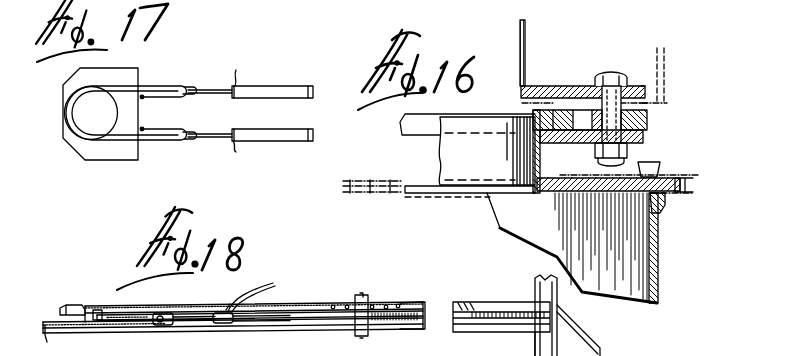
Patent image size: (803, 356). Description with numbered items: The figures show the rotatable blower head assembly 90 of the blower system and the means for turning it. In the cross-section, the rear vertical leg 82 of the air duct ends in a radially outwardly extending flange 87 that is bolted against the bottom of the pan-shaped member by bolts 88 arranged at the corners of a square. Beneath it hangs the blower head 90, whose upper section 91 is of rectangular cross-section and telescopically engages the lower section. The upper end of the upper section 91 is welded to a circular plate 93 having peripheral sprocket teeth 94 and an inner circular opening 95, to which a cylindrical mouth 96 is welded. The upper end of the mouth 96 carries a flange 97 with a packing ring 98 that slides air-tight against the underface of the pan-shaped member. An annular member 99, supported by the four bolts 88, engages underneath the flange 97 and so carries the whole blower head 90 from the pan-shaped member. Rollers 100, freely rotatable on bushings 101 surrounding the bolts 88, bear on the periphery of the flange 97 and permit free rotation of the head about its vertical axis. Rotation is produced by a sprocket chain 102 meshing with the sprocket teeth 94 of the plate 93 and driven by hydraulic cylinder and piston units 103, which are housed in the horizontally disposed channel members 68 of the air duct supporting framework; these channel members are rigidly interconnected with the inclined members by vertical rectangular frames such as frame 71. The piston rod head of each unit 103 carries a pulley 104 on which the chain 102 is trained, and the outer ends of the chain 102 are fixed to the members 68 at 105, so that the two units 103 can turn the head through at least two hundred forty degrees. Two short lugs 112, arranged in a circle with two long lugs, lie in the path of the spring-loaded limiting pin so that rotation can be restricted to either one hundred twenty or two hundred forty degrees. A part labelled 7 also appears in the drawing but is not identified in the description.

In FIG. 17, the housing body 7 is at (118, 160).
In FIG. 18, the channel members 68 is at (323, 306).
In FIG. 16, the vertical rectangular frame 71 is at (543, 295).
In FIG. 16, the rear vertical leg 82 is at (524, 52).
In FIG. 16, the flange 87 is at (540, 86).
In FIG. 16, the bolts 88 is at (648, 118).
In FIG. 16, the blower head assembly 90 is at (668, 265).
In FIG. 16, the upper section 91 is at (658, 242).
In FIG. 17, the circular plate 93 is at (112, 112).
In FIG. 16, the circular plate 93 is at (553, 188).
In FIG. 16, the sprocket teeth 94 is at (682, 178).
In FIG. 16, the inner circular opening 95 is at (537, 189).
In FIG. 16, the cylindrical mouth 96 is at (530, 150).
In FIG. 16, the flange 97 is at (528, 130).
In FIG. 16, the packing ring 98 is at (553, 110).
In FIG. 16, the annular member 99 is at (643, 136).
In FIG. 16, the rollers 100 is at (647, 103).
In FIG. 16, the bushings 101 is at (645, 85).
In FIG. 17, the sprocket chain 102 is at (123, 87).
In FIG. 16, the sprocket chain 102 is at (375, 195).
In FIG. 18, the sprocket chain 102 is at (50, 340).
In FIG. 17, the hydraulic cylinder and piston units 103 is at (265, 86).
In FIG. 18, the hydraulic cylinder and piston units 103 is at (282, 322).
In FIG. 17, the pulley 104 is at (174, 141).
In FIG. 18, the pulley 104 is at (158, 325).
In FIG. 18, the chain fixing points 105 is at (105, 312).
In FIG. 17, the short lugs 112 is at (250, 0).
In FIG. 16, the short lugs 112 is at (652, 162).